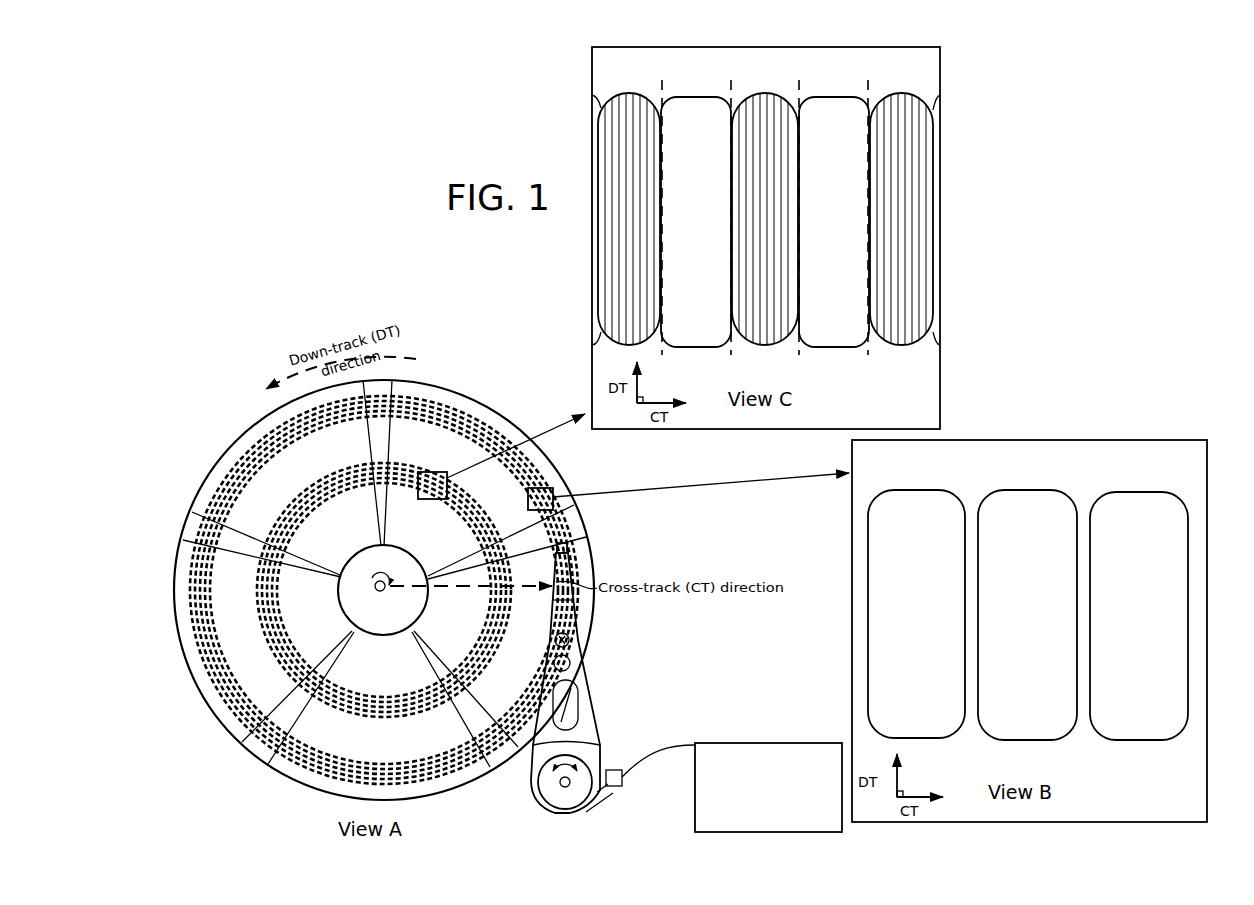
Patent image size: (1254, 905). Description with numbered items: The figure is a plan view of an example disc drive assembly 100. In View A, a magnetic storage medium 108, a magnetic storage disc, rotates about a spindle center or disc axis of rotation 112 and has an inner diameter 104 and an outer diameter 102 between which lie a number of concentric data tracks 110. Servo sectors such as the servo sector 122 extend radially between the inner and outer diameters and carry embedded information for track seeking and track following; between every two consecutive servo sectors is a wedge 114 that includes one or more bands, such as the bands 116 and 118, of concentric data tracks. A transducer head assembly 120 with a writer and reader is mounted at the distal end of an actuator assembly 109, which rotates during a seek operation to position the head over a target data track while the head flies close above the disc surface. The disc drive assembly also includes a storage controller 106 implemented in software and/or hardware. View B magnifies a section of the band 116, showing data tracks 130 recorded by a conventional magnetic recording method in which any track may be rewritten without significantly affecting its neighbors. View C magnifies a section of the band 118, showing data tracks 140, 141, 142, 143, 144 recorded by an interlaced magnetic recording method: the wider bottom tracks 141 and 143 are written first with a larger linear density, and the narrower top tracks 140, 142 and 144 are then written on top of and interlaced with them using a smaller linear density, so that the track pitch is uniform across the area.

The disc drive assembly 100 is at (323, 137).
The outer diameter 102 is at (252, 424).
The inner diameter 104 is at (338, 590).
The storage controller 106 is at (768, 787).
The magnetic storage medium 108 is at (277, 778).
The actuator assembly 109 is at (580, 672).
The concentric data tracks 110 is at (460, 415).
The disc axis of rotation 112 is at (367, 583).
The wedge 114 is at (172, 545).
The band 116 is at (503, 423).
The band 118 is at (415, 457).
The transducer head assembly 120 is at (570, 548).
The servo sector 122 is at (176, 511).
The data tracks 130 is at (1028, 615).
The data track 140 is at (629, 219).
The data track 141 is at (696, 222).
The data track 142 is at (765, 219).
The data track 143 is at (834, 222).
The data track 144 is at (901, 219).